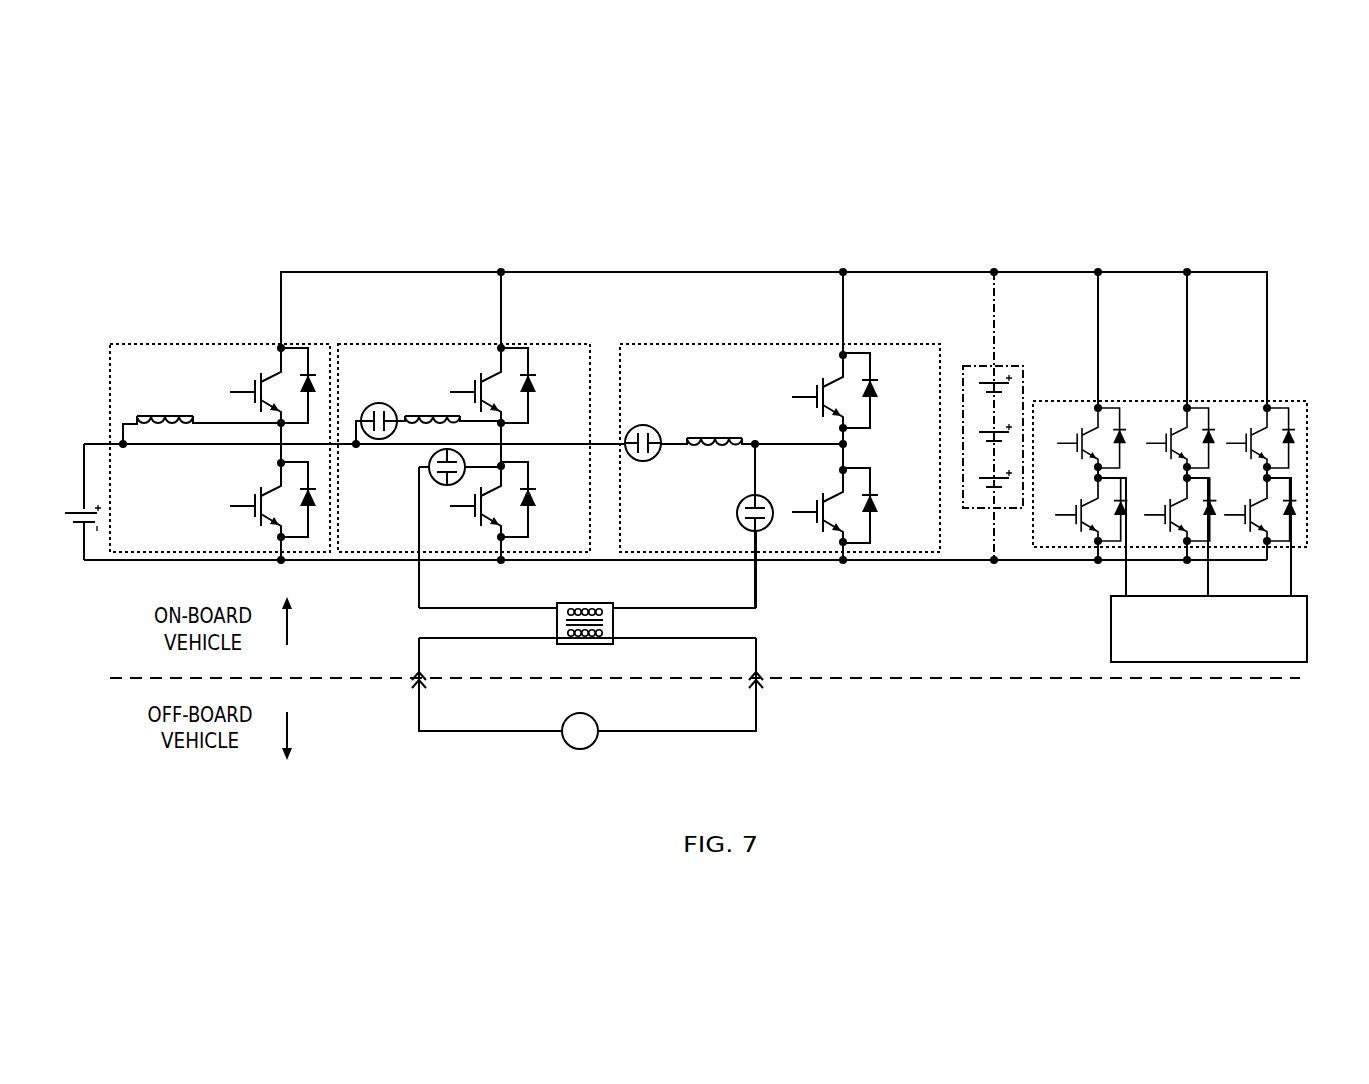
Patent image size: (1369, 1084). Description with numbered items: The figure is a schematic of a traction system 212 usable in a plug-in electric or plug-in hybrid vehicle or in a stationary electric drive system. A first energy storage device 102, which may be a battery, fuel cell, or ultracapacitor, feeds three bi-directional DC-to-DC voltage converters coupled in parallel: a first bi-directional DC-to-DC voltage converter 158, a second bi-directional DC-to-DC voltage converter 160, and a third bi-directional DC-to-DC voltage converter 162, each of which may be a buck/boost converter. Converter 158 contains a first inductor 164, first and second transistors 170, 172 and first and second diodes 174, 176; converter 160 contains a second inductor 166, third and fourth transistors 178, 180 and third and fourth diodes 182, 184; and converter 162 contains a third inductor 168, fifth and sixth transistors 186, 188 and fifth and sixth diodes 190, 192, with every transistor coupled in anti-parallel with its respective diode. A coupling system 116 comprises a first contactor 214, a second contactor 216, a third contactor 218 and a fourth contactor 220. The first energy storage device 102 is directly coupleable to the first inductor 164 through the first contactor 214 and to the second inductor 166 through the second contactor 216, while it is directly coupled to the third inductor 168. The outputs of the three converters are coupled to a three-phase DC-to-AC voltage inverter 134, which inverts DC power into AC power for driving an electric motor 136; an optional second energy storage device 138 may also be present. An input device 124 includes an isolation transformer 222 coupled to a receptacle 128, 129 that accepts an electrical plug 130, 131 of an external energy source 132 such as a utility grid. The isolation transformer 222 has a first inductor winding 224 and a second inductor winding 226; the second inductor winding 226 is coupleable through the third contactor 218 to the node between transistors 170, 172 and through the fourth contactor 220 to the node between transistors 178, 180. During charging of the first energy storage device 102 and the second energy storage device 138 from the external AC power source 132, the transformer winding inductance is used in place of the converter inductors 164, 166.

The traction system 212 is at (704, 238).
The first energy storage device 102 is at (80, 511).
The third bi-directional DC-to-DC voltage converter 162 is at (144, 344).
The third inductor 168 is at (147, 415).
The fifth transistor 186 is at (240, 392).
The sixth transistor 188 is at (240, 504).
The fifth diode 190 is at (311, 388).
The sixth diode 192 is at (310, 506).
The second bi-directional DC-to-DC voltage converter 160 is at (402, 344).
The coupling system 116 is at (560, 491).
The second contactor 216 is at (369, 407).
The fourth contactor 220 is at (431, 479).
The first contactor 214 is at (656, 460).
The third contactor 218 is at (741, 527).
The second inductor 166 is at (413, 415).
The third transistor 178 is at (460, 392).
The fourth transistor 180 is at (462, 506).
The third diode 182 is at (540, 389).
The fourth diode 184 is at (538, 520).
The first bi-directional DC-to-DC voltage converter 158 is at (700, 344).
The first inductor 164 is at (695, 438).
The first transistor 170 is at (806, 397).
The second transistor 172 is at (806, 512).
The first diode 174 is at (884, 398).
The second diode 176 is at (878, 521).
The second energy storage device 138 is at (976, 508).
The three-phase DC-to-AC voltage inverter 134 is at (1066, 401).
The electric motor 136 is at (1307, 645).
The isolation transformer 222 is at (614, 623).
The second inductor winding 226 is at (600, 610).
The first inductor winding 224 is at (570, 633).
The input device 124 is at (645, 713).
The receptacle 128 is at (417, 674).
The receptacle 129 is at (762, 679).
The electrical plug 130 is at (415, 684).
The electrical plug 131 is at (762, 685).
The external energy source 132 is at (580, 750).